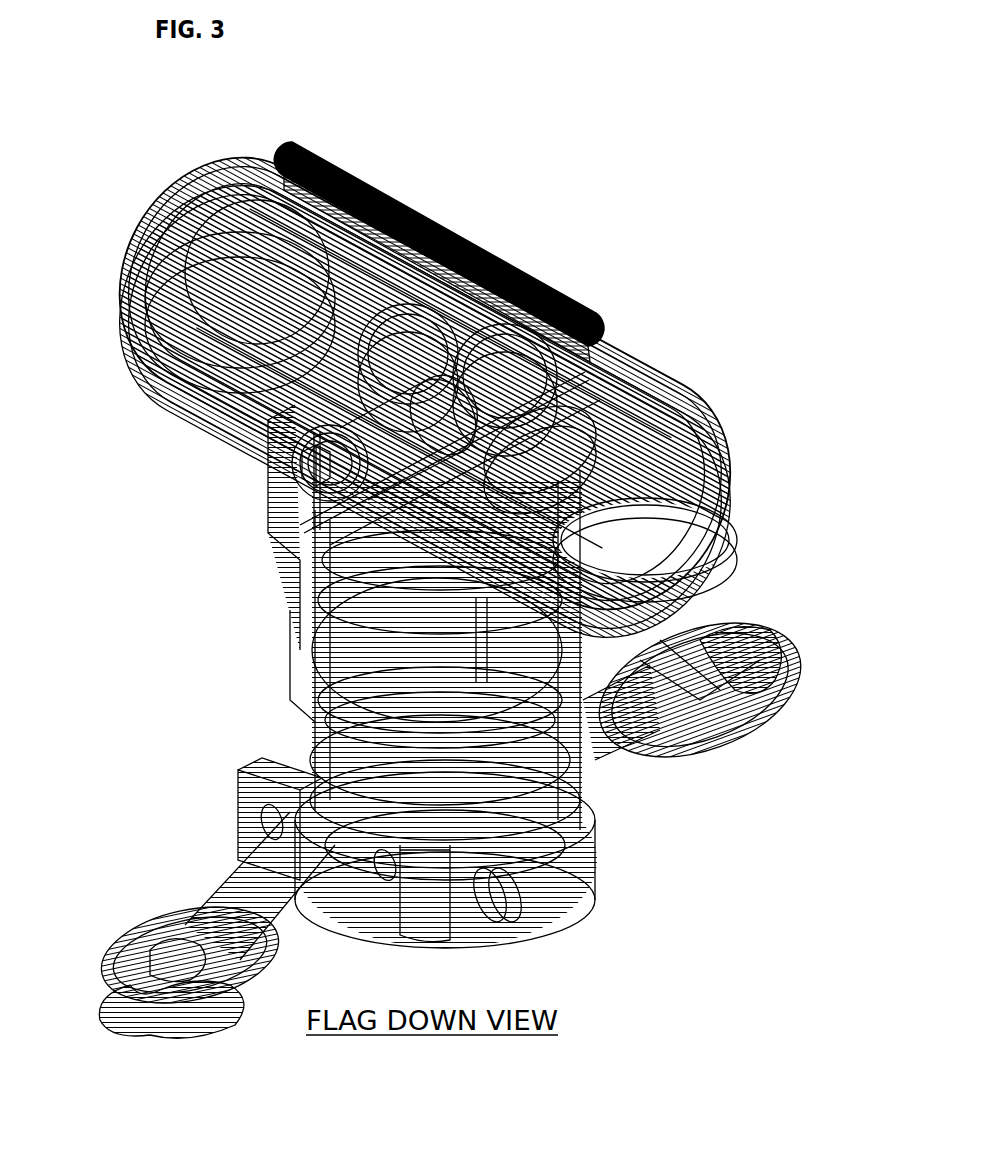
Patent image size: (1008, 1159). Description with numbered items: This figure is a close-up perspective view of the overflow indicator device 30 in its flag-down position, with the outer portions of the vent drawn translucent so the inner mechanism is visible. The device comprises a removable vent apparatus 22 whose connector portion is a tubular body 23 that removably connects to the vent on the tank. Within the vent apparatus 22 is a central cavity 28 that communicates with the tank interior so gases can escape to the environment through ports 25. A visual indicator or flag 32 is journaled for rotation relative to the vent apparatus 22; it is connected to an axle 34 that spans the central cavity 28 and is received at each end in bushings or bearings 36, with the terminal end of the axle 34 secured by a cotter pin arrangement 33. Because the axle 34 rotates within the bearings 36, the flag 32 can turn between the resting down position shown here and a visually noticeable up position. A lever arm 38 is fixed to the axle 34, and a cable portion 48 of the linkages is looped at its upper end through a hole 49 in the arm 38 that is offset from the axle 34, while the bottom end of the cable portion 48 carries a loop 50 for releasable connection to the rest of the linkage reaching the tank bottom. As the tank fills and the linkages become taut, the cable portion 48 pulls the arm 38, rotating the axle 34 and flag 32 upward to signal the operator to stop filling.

The vent apparatus 22 is at (755, 462).
The tubular body 23 is at (598, 853).
The ports 25 is at (165, 313).
The central cavity 28 is at (428, 893).
The overflow indicator device 30 is at (783, 389).
The flag 32 is at (413, 200).
The cotter pin arrangement 33 is at (311, 475).
The axle 34 is at (501, 352).
The bearings 36 is at (546, 300).
The arm 38 is at (441, 341).
The cable portion 48 is at (545, 657).
The hole 49 is at (479, 423).
The loop 50 is at (505, 905).